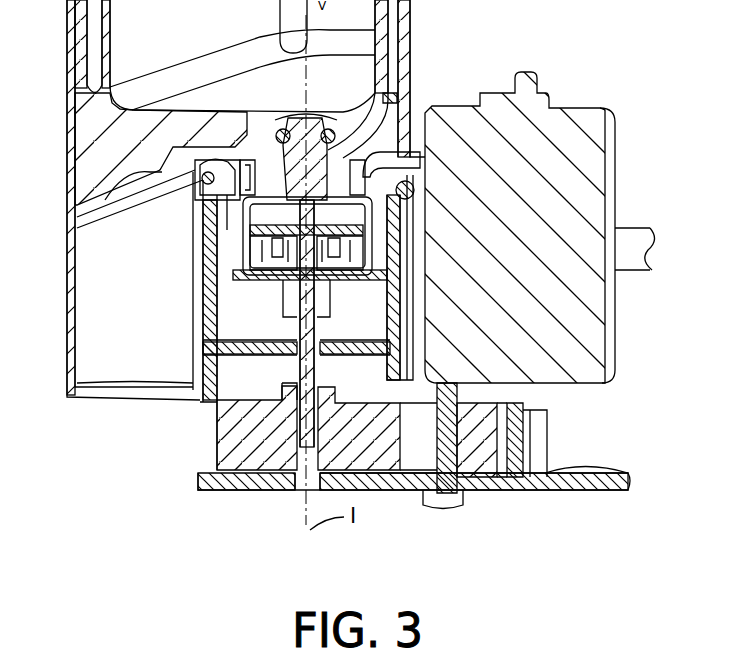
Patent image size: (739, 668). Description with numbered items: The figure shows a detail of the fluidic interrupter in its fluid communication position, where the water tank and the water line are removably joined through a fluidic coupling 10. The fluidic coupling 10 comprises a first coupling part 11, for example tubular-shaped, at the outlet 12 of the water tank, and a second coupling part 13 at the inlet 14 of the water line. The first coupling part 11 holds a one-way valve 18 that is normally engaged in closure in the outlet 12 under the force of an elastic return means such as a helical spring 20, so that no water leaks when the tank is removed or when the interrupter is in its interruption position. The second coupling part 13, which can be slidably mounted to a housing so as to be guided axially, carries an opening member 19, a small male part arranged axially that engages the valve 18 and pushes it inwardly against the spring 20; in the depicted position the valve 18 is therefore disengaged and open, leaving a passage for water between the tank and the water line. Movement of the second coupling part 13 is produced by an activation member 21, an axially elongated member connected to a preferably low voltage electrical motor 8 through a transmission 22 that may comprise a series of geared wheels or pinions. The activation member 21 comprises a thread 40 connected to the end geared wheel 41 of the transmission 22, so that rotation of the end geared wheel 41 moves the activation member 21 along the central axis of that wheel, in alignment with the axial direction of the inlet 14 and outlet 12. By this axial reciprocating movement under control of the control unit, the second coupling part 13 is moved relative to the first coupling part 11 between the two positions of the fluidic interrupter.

The electrical motor 8 is at (598, 176).
The fluidic coupling 10 is at (98, 270).
The first coupling part 11 is at (228, 197).
The outlet 12 is at (283, 130).
The second coupling part 13 is at (245, 258).
The inlet 14 is at (262, 256).
The one-way valve 18 is at (400, 93).
The opening member 19 is at (390, 270).
The helical spring 20 is at (410, 205).
The activation member 21 is at (300, 375).
The transmission 22 is at (557, 540).
The thread 40 is at (224, 444).
The end geared wheel 41 is at (357, 428).